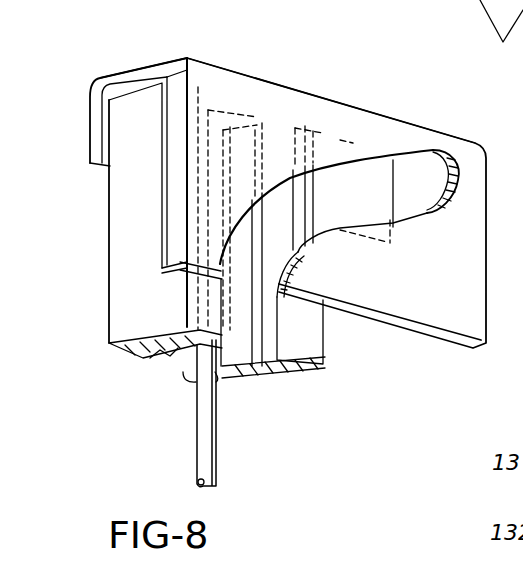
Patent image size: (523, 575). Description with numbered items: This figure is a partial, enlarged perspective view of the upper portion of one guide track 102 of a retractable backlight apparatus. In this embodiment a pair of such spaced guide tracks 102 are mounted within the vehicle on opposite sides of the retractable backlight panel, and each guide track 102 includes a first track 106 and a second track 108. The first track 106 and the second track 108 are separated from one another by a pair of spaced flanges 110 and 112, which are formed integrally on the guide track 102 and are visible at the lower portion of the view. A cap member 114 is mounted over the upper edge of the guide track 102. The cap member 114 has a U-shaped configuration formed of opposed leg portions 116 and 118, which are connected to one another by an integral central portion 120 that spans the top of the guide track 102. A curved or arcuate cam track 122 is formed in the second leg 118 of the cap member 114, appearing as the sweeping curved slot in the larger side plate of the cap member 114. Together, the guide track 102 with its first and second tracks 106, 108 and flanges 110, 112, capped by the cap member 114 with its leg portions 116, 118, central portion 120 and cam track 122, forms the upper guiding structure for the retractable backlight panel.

The guide track 102 is at (92, 238).
The first track 106 is at (247, 364).
The second track 108 is at (293, 377).
The flange 110 is at (177, 344).
The flange 112 is at (279, 365).
The cap member 114 is at (262, 89).
The leg portion 116 is at (97, 99).
The second leg 118 is at (181, 98).
The central portion 120 is at (137, 64).
The cam track 122 is at (344, 168).